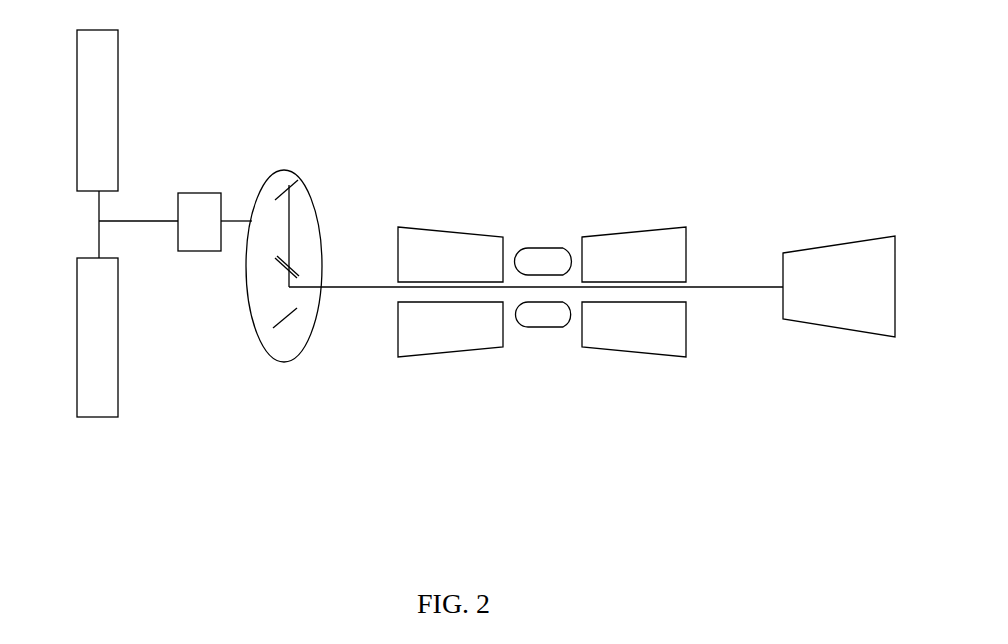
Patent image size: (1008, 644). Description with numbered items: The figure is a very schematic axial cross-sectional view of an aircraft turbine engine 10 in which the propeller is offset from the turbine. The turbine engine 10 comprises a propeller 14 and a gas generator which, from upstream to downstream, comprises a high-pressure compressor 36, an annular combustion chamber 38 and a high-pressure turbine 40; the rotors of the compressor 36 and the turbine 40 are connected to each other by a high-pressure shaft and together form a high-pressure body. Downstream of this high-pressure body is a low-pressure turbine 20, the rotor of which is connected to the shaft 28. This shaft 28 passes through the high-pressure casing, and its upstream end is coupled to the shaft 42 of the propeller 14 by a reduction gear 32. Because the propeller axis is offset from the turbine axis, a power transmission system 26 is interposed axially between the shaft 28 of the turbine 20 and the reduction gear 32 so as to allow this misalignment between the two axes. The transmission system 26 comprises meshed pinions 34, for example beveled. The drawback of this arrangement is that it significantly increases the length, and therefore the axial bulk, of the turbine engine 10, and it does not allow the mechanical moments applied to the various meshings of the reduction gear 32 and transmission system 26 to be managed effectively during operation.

The turbine engine 10 is at (486, 421).
The propeller 14 is at (96, 360).
The low-pressure turbine 20 is at (851, 318).
The power transmission system 26 is at (310, 191).
The shaft 28 is at (375, 290).
The reduction gear 32 is at (200, 251).
The meshed pinions 34 is at (297, 280).
The high-pressure compressor 36 is at (448, 247).
The annular combustion chamber 38 is at (540, 262).
The high-pressure turbine 40 is at (648, 243).
The shaft of the propeller 42 is at (142, 221).